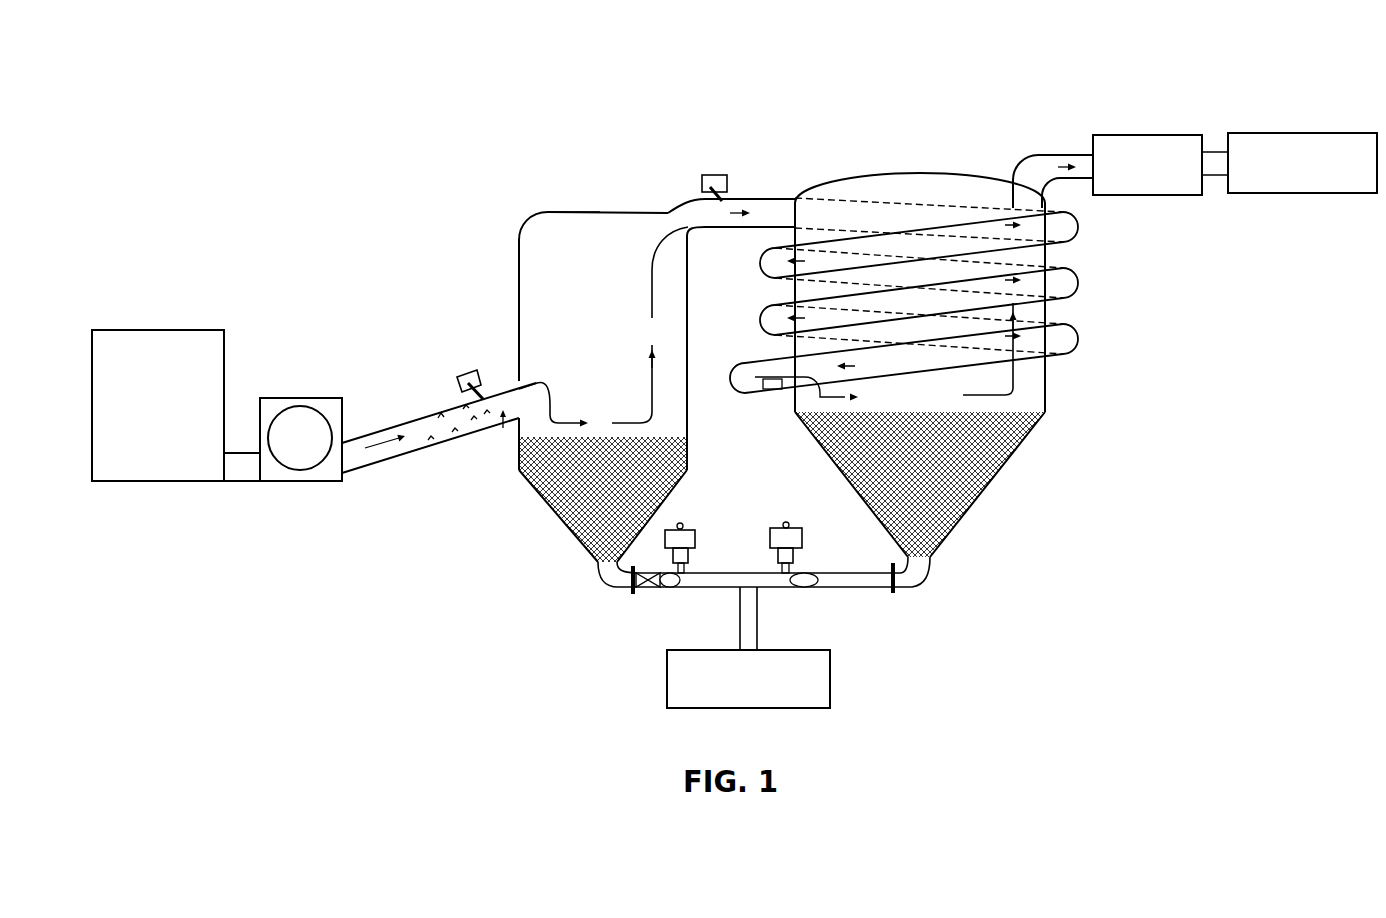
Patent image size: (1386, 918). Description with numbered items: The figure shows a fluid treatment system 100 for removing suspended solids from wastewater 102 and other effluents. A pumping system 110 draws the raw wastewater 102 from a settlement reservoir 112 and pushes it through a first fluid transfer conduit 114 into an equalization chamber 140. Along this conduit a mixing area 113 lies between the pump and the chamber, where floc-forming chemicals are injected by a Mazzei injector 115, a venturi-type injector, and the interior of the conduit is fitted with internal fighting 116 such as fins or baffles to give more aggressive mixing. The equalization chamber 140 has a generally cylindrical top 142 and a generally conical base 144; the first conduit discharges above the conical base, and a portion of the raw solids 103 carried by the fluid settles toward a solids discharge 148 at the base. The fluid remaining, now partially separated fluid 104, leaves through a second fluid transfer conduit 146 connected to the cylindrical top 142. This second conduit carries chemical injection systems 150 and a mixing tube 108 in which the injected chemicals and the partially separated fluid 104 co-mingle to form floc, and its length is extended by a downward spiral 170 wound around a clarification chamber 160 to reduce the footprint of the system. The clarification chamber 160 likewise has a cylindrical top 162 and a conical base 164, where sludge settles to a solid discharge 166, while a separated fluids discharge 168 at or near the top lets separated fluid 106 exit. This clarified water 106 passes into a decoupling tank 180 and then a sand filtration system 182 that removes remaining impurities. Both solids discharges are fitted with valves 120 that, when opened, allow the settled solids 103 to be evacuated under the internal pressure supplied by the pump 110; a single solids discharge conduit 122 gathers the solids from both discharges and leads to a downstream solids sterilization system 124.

The fluid treatment system 100 is at (286, 187).
The wastewater 102 is at (540, 388).
The raw solids 103 is at (557, 510).
The partially separated fluid 104 is at (708, 228).
The separated fluid 106 is at (1055, 160).
The mixing tube 108 is at (767, 217).
The pumping system 110 is at (297, 405).
The settlement reservoir 112 is at (148, 482).
The mixing area 113 is at (513, 436).
The first fluid transfer conduit 114 is at (467, 435).
The Mazzei injector 115 is at (465, 372).
The internal fighting 116 is at (418, 420).
The valves 120 is at (785, 525).
The single solids discharge conduit 122 is at (740, 612).
The solids sterilization system 124 is at (667, 672).
The equalization chamber 140 is at (519, 283).
The cylindrical top 142 is at (550, 213).
The conical base 144 is at (578, 540).
The second fluid transfer conduit 146 is at (678, 215).
The solids discharge 148 is at (593, 573).
The chemical injection systems 150 is at (712, 175).
The clarification chamber 160 is at (862, 183).
The cylindrical top 162 is at (1040, 198).
The conical base 164 is at (987, 482).
The solid discharge 166 is at (928, 560).
The separated fluids discharge 168 is at (1013, 167).
The downward spiral 170 is at (1078, 339).
The decoupling tank 180 is at (1113, 135).
The sand filtration system 182 is at (1272, 135).